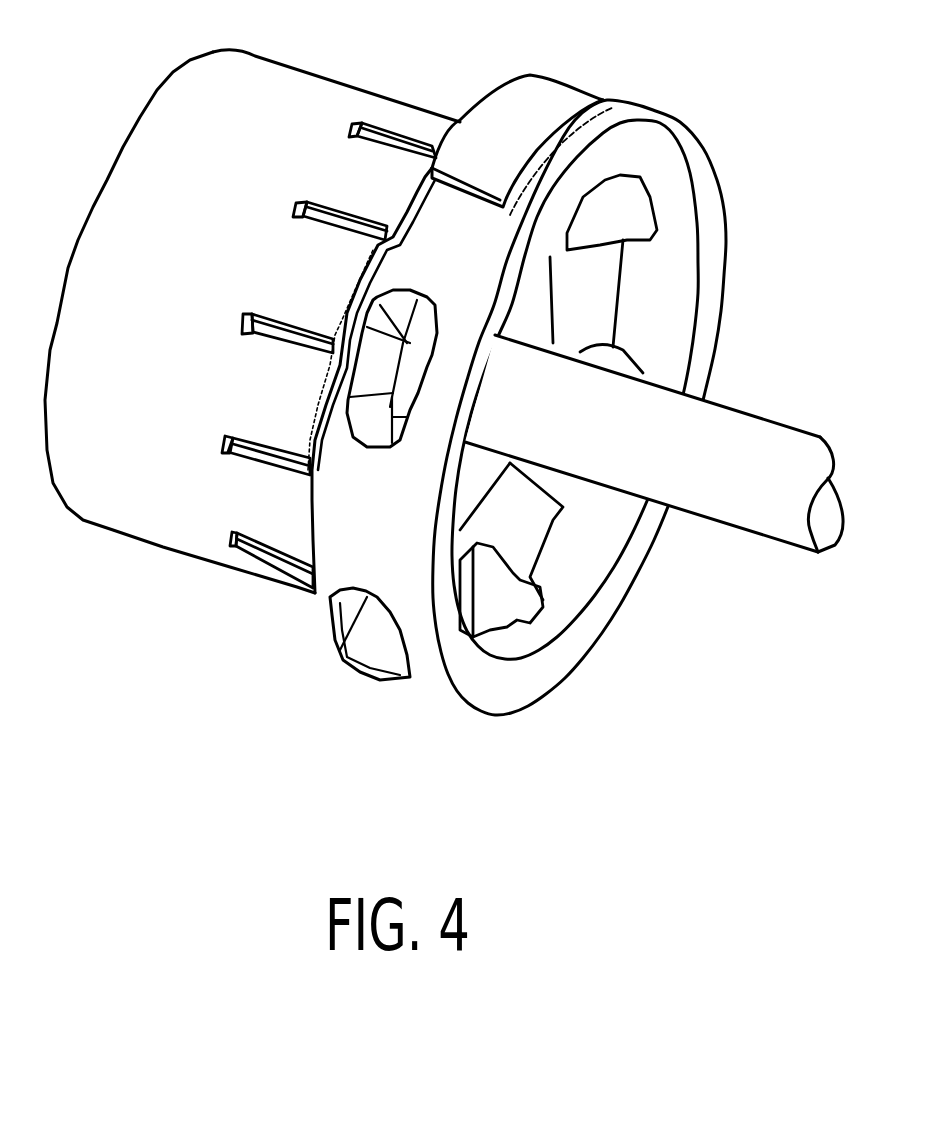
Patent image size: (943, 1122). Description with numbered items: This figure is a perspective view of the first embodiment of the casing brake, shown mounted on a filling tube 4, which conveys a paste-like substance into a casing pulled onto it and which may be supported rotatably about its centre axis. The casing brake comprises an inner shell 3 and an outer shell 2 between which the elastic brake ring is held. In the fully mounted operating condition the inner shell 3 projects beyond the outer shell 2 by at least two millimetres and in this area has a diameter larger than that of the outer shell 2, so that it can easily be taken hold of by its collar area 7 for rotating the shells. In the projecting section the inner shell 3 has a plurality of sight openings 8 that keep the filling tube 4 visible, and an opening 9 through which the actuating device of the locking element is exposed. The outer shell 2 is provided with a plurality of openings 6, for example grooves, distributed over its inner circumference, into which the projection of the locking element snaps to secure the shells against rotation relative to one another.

The outer shell 2 is at (173, 97).
The inner shell 3 is at (707, 185).
The filling tube 4 is at (762, 427).
The opening 6 is at (381, 124).
The collar area 7 is at (473, 268).
The sight openings 8 is at (390, 357).
The opening 9 is at (603, 103).